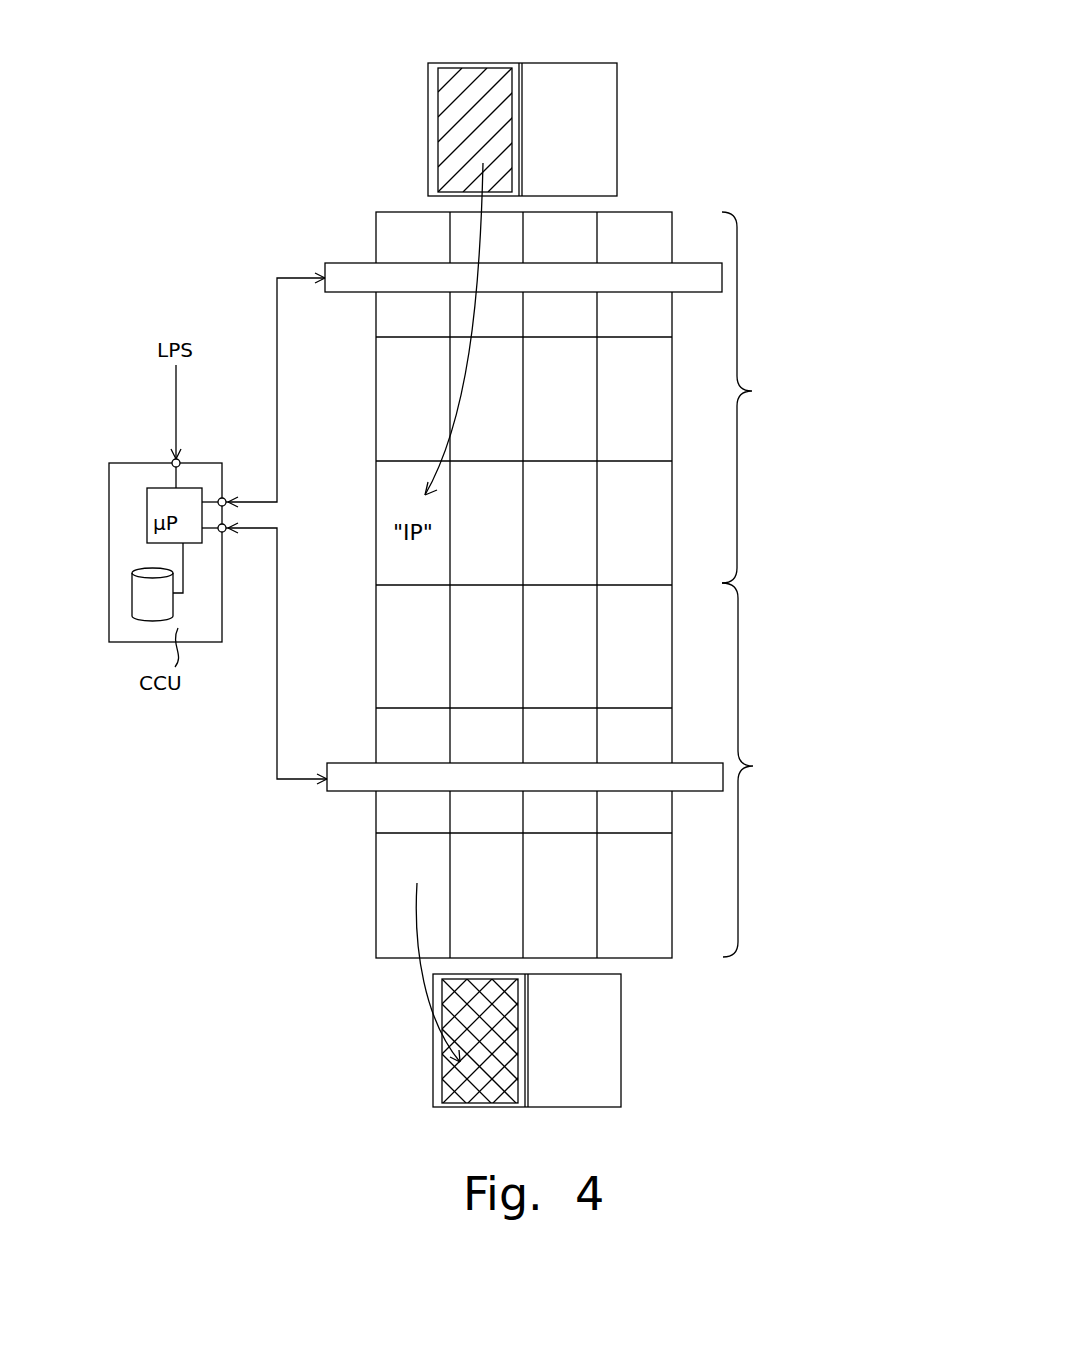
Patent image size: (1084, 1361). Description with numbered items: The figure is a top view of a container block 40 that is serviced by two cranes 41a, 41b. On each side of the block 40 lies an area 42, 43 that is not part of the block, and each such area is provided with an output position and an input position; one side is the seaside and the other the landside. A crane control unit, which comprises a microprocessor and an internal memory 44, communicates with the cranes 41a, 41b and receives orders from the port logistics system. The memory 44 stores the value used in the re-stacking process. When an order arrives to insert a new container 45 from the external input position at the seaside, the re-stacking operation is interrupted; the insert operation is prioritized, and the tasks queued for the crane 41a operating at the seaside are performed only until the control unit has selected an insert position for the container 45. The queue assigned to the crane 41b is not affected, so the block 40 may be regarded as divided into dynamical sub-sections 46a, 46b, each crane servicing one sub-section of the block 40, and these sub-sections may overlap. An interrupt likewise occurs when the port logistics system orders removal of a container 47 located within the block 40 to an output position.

The block 40 is at (777, 515).
The crane 41a is at (340, 273).
The crane 41b is at (348, 783).
The area 42 is at (526, 114).
The area 43 is at (548, 1058).
The internal memory 44 is at (143, 613).
The new container 45 is at (452, 137).
The dynamical sub-section 46a is at (796, 397).
The dynamical sub-section 46b is at (796, 770).
The container 47 is at (452, 1083).